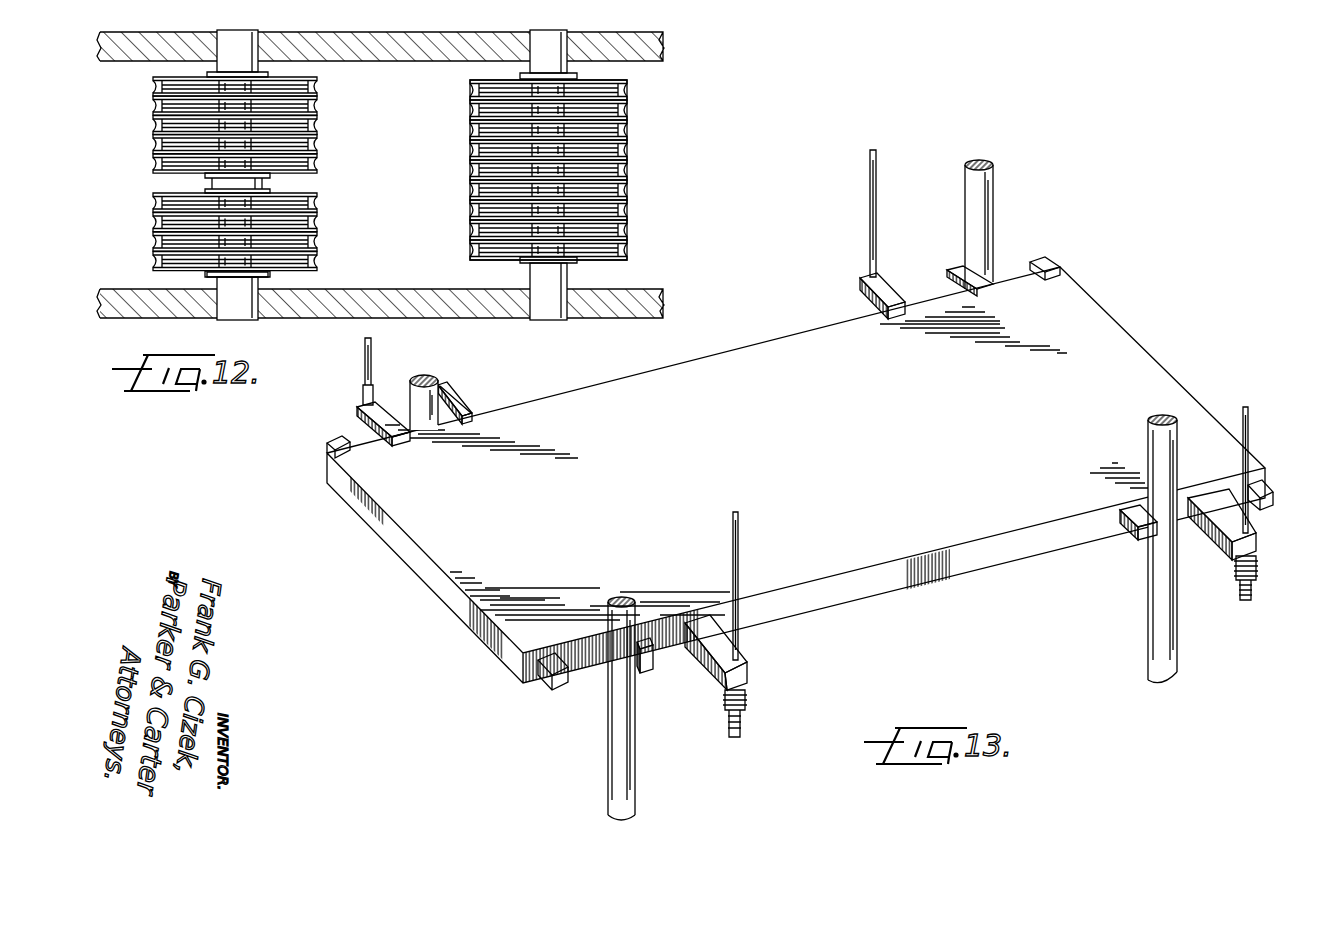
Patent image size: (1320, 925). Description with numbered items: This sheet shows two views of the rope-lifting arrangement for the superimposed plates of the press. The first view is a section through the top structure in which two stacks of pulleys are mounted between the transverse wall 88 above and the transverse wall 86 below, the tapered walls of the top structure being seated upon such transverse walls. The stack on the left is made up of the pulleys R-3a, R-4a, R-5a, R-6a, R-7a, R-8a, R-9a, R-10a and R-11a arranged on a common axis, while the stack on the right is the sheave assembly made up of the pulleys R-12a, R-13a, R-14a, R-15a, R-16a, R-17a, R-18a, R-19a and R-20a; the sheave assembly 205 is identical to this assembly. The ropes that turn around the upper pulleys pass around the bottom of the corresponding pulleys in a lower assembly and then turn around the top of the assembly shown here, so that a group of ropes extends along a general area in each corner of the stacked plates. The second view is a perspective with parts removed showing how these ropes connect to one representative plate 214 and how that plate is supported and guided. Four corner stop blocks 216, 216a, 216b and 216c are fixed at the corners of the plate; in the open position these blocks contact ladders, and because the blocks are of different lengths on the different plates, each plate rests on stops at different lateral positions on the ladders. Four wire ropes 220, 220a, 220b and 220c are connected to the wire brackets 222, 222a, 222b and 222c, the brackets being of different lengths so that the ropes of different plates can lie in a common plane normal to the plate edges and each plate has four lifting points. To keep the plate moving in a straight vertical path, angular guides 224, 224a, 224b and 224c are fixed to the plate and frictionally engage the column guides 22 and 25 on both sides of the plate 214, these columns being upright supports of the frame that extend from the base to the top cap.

In FIG. 12, the transverse wall 88 is at (663, 50).
In FIG. 12, the transverse wall 86 is at (663, 312).
In FIG. 12, the sheave assembly 205 is at (494, 274).
In FIG. 12, the pulley R-3a is at (317, 86).
In FIG. 12, the pulley R-4a is at (317, 170).
In FIG. 12, the pulley R-5a is at (153, 205).
In FIG. 12, the pulley R-6a is at (153, 145).
In FIG. 12, the pulley R-7a is at (317, 226).
In FIG. 12, the pulley R-8a is at (317, 131).
In FIG. 12, the pulley R-9a is at (153, 247).
In FIG. 12, the pulley R-10a is at (153, 105).
In FIG. 12, the pulley R-11a is at (317, 263).
In FIG. 12, the pulley R-12a is at (627, 90).
In FIG. 12, the pulley R-13a is at (627, 170).
In FIG. 12, the pulley R-14a is at (627, 210).
In FIG. 12, the pulley R-15a is at (627, 150).
In FIG. 12, the pulley R-16a is at (627, 230).
In FIG. 12, the pulley R-17a is at (627, 130).
In FIG. 12, the pulley R-18a is at (627, 252).
In FIG. 12, the pulley R-19a is at (627, 110).
In FIG. 12, the pulley R-20a is at (627, 190).
In FIG. 13, the plate 214 is at (1128, 345).
In FIG. 13, the column support 22 is at (430, 380).
In FIG. 13, the column support 25 is at (985, 212).
In FIG. 13, the corner stop block 216 is at (1050, 264).
In FIG. 13, the corner stop block 216a is at (1275, 494).
In FIG. 13, the corner stop block 216b is at (556, 693).
In FIG. 13, the corner stop block 216c is at (327, 445).
In FIG. 13, the wire rope 220 is at (870, 212).
In FIG. 13, the wire rope 220a is at (1267, 372).
In FIG. 13, the wire rope 220b is at (740, 532).
In FIG. 13, the wire rope 220c is at (365, 360).
In FIG. 13, the wire bracket 222 is at (858, 290).
In FIG. 13, the wire bracket 222a is at (1215, 534).
In FIG. 13, the wire bracket 222b is at (748, 670).
In FIG. 13, the wire bracket 222c is at (357, 418).
In FIG. 13, the angular guide 224 is at (960, 270).
In FIG. 13, the angular guide 224a is at (1142, 540).
In FIG. 13, the angular guide 224b is at (648, 680).
In FIG. 13, the angular guide 224c is at (452, 407).